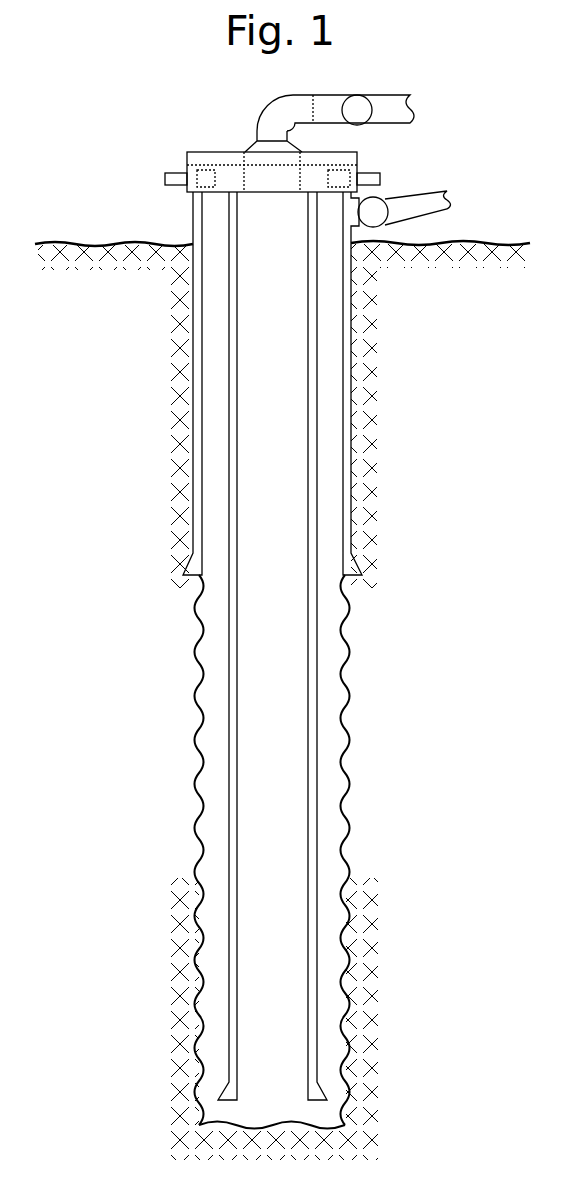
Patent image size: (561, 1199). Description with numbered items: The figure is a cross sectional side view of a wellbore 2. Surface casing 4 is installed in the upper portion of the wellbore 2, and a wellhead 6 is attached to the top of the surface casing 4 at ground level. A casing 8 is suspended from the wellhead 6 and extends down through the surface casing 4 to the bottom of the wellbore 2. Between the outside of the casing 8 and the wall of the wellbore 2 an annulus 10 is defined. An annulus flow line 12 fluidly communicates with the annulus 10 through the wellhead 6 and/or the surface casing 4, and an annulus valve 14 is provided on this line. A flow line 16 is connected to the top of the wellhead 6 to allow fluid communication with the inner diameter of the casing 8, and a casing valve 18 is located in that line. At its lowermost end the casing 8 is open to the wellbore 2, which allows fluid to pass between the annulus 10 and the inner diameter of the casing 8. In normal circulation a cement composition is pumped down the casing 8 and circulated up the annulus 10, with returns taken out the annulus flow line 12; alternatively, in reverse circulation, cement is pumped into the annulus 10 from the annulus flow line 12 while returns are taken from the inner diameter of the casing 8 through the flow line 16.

The wellbore 2 is at (353, 623).
The surface casing 4 is at (353, 473).
The wellhead 6 is at (187, 168).
The casing 8 is at (317, 935).
The annulus 10 is at (327, 578).
The annulus flow line 12 is at (449, 207).
The annulus valve 14 is at (385, 200).
The flow line 16 is at (393, 107).
The casing valve 18 is at (357, 110).